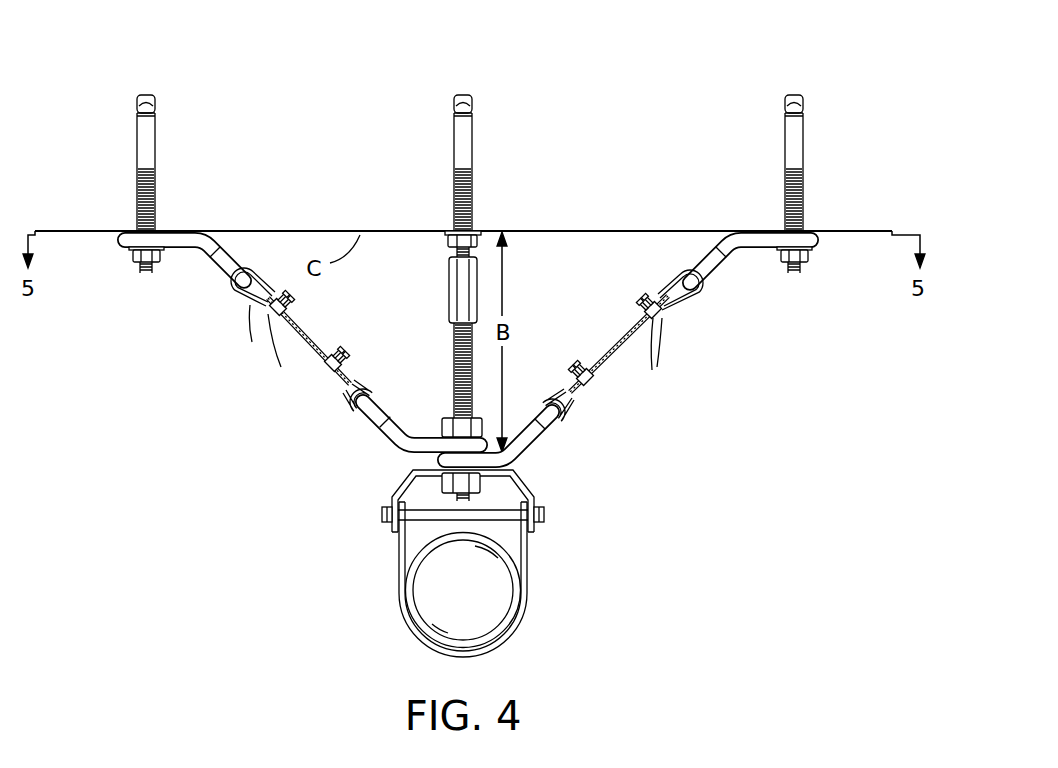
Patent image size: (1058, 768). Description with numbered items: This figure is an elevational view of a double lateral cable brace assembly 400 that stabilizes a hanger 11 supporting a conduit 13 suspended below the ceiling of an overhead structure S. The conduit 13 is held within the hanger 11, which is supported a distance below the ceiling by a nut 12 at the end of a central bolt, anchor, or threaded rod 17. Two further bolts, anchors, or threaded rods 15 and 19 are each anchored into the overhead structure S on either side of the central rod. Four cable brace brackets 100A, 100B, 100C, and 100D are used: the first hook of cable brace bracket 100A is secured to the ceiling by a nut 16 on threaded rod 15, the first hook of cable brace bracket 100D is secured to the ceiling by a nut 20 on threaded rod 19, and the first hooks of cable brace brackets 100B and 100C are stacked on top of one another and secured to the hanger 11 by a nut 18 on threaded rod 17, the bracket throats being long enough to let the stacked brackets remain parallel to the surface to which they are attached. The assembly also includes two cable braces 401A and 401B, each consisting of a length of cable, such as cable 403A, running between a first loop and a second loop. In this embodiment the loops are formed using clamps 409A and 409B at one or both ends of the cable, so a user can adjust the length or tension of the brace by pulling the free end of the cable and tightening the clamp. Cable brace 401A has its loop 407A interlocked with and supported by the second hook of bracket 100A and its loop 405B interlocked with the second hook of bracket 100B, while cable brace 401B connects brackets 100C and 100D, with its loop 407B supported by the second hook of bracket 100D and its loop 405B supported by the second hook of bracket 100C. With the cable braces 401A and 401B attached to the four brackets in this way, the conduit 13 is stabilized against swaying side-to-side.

The double lateral cable brace assembly 400 is at (114, 47).
The hanger 11 is at (400, 474).
The nut 12 is at (478, 497).
The conduit 13 is at (476, 605).
The threaded rod 15 is at (146, 276).
The nut 16 is at (135, 266).
The threaded rod 17 is at (455, 364).
The nut 18 is at (449, 417).
The threaded rod 19 is at (795, 275).
The nut 20 is at (803, 261).
The cable brace bracket 100A is at (191, 245).
The cable brace bracket 100B is at (383, 432).
The cable brace bracket 100C is at (545, 434).
The cable brace bracket 100D is at (767, 241).
The cable brace 401A is at (253, 361).
The cable brace 401B is at (682, 358).
The cable 403A is at (318, 338).
The first loop 405B is at (347, 402).
The second loop 407A is at (252, 308).
The second loop 407B is at (685, 303).
The clamps 409A is at (343, 378).
The clamps 409B is at (606, 380).
The overhead structure S is at (257, 185).